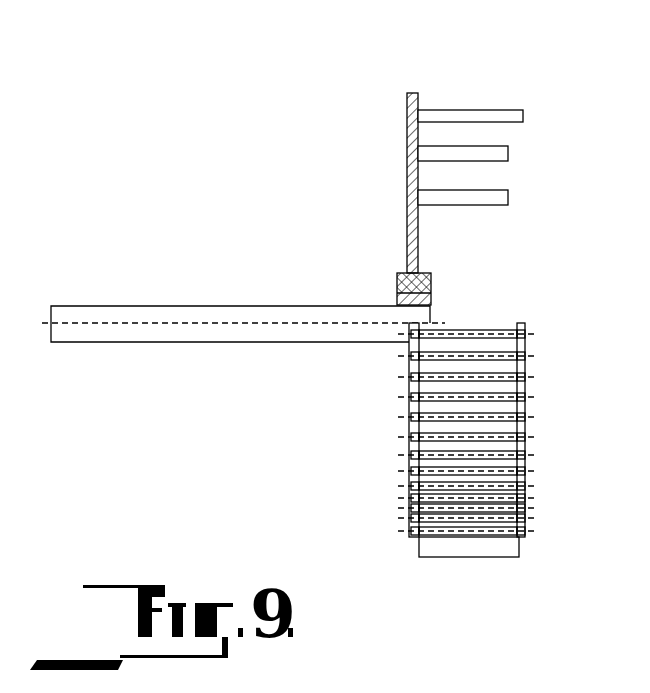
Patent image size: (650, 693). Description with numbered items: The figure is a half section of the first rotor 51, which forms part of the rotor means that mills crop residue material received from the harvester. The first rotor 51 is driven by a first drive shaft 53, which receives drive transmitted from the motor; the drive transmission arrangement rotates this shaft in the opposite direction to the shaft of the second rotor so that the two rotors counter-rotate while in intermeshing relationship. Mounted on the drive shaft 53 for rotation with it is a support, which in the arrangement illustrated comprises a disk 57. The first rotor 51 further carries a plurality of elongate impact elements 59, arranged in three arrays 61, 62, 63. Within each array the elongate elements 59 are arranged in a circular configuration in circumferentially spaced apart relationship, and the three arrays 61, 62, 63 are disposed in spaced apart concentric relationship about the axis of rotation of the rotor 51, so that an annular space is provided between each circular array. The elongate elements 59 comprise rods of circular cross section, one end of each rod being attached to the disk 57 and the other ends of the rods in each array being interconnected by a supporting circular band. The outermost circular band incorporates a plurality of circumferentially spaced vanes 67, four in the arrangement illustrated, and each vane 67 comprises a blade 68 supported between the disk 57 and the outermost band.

The first rotor 51 is at (275, 120).
The first drive shaft 53 is at (196, 314).
The disk 57 is at (407, 245).
The elongate impact elements 59 is at (477, 109).
The first array 61 is at (523, 113).
The second array 62 is at (508, 150).
The third array 63 is at (508, 198).
The vanes 67 is at (477, 469).
The blade 68 is at (503, 548).